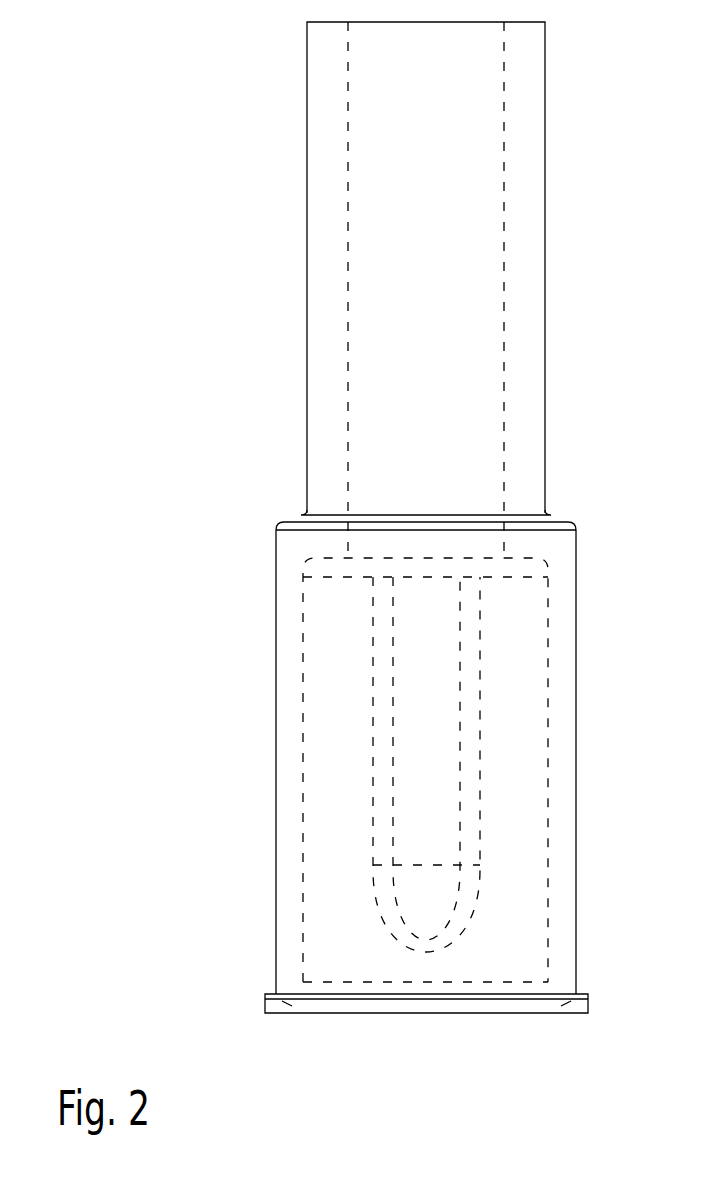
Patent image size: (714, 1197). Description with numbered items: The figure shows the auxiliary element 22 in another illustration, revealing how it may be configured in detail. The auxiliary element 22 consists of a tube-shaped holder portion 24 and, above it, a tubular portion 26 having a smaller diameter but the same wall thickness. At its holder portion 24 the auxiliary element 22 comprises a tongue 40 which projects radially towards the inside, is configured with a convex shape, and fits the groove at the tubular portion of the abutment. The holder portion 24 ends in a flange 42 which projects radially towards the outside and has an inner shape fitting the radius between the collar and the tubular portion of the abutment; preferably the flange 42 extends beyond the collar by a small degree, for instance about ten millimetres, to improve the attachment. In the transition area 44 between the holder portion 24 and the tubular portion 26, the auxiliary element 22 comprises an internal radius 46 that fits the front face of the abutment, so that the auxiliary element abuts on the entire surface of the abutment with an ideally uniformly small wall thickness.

The auxiliary element 22 is at (473, 303).
The holder portion 24 is at (563, 753).
The tubular portion 26 is at (530, 145).
The tongue 40 is at (438, 683).
The flange 42 is at (265, 1003).
The transition area 44 is at (260, 554).
The internal radius 46 is at (548, 572).